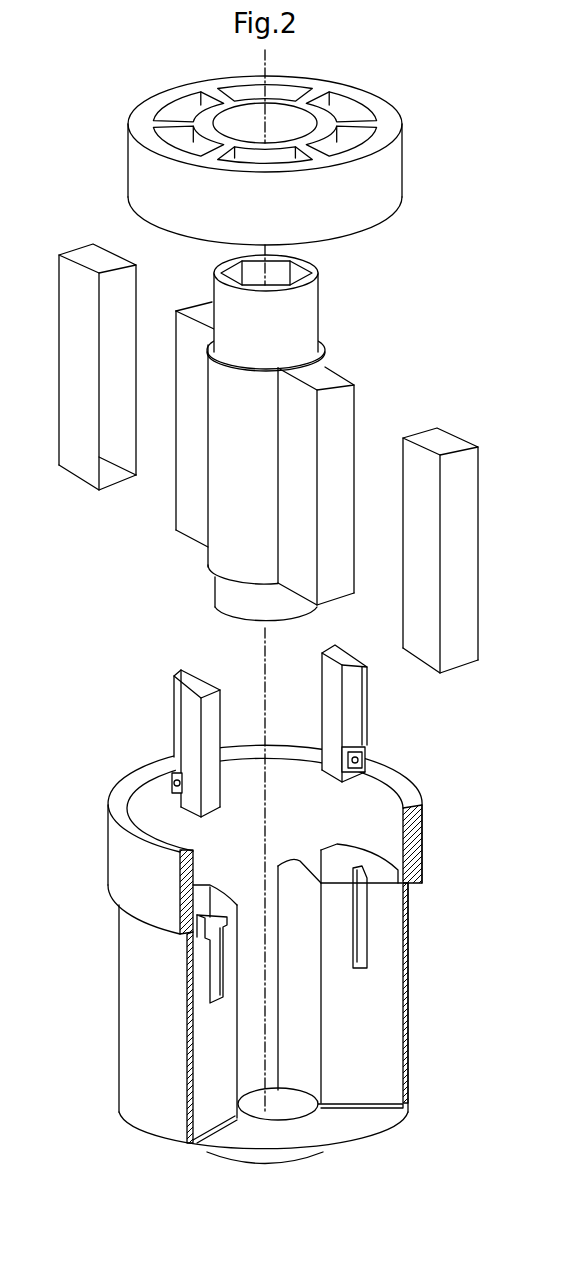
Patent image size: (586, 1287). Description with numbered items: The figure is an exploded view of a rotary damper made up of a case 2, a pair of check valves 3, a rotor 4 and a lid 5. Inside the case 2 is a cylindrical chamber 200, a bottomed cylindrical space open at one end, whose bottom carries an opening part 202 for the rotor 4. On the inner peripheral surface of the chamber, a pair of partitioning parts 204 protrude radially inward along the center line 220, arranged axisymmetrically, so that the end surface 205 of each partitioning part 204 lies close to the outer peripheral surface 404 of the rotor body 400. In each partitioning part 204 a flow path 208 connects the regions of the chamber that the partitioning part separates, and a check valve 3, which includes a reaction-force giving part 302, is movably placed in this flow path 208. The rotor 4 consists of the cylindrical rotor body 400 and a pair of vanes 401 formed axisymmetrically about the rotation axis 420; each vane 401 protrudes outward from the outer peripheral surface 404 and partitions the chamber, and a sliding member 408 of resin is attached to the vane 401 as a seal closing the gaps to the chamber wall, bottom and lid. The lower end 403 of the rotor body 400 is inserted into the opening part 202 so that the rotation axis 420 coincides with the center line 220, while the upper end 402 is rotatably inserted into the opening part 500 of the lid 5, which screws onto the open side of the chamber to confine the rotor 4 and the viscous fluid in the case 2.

The case 2 is at (270, 921).
The check valve 3 is at (203, 692).
The rotor 4 is at (275, 446).
The lid 5 is at (403, 167).
The cylindrical chamber 200 is at (282, 821).
The opening part 202 is at (286, 1104).
The partitioning part 204 is at (360, 992).
The end surface 205 is at (300, 1038).
The flow path 208 is at (210, 912).
The center line 220 is at (203, 574).
The reaction-force giving part 302 is at (172, 777).
The rotor body 400 is at (326, 349).
The vane 401 is at (197, 303).
The upper end 402 is at (322, 284).
The lower end 403 is at (233, 598).
The outer peripheral surface 404 is at (226, 541).
The sliding member 408 is at (89, 244).
The rotation axis 420 is at (262, 57).
The opening part 500 is at (281, 119).